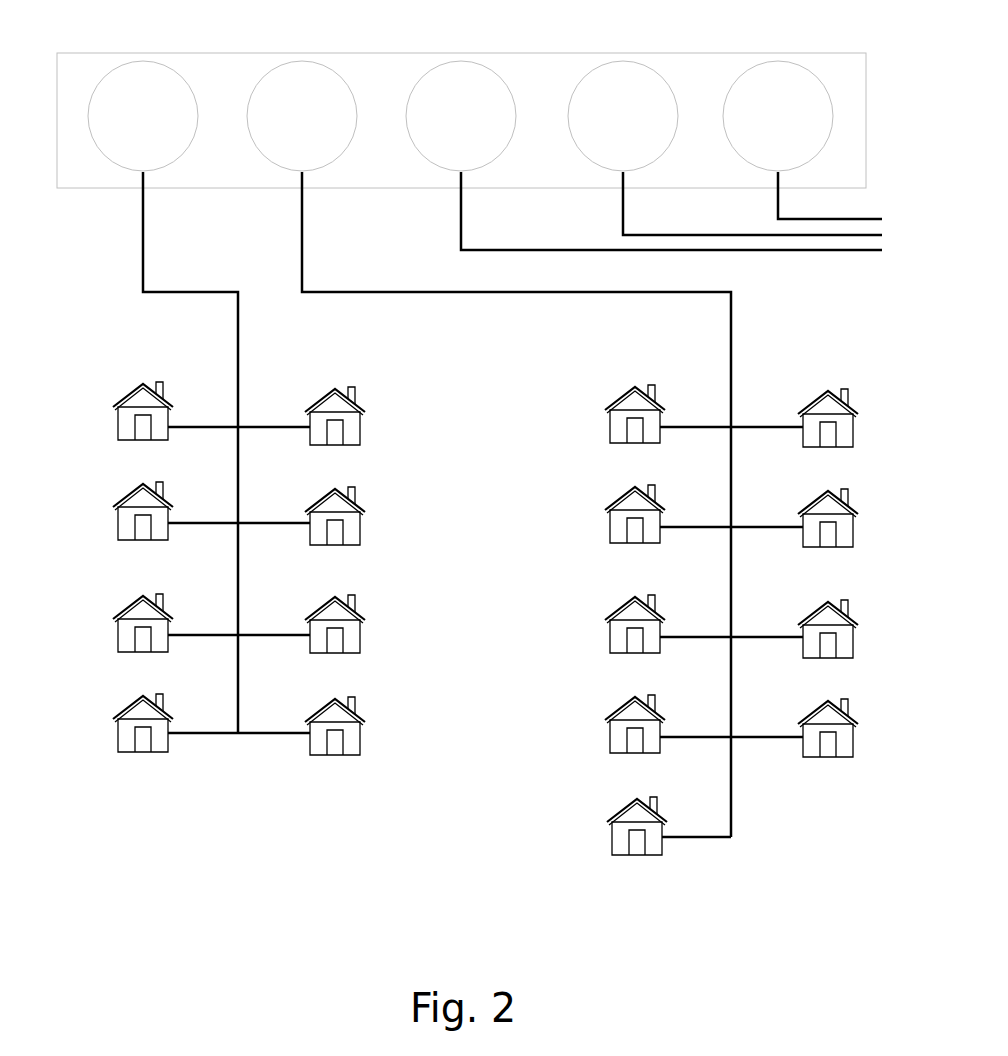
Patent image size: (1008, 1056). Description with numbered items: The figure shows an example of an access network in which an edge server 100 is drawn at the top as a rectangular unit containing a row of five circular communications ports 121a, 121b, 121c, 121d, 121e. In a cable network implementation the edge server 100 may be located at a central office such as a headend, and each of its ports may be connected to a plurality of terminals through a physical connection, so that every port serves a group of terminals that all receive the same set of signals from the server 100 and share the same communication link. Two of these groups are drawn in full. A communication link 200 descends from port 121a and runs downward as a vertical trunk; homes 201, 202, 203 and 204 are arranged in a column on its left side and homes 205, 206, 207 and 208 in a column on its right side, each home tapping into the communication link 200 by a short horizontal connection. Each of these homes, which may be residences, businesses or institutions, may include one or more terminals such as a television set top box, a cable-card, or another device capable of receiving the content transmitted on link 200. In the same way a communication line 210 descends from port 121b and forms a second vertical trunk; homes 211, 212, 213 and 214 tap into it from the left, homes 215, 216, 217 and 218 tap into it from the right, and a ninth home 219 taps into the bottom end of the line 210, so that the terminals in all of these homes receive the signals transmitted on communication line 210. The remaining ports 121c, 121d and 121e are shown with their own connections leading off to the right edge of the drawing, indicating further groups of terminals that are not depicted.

The server 100 is at (287, 53).
The port 121a is at (143, 116).
The port 121b is at (302, 116).
The port 121c is at (461, 116).
The port 121d is at (623, 116).
The port 121e is at (778, 116).
The communication link 200 is at (183, 292).
The communication line 210 is at (341, 292).
The home 201 is at (142, 382).
The home 202 is at (142, 482).
The home 203 is at (142, 594).
The home 204 is at (142, 694).
The home 205 is at (334, 387).
The home 206 is at (334, 487).
The home 207 is at (334, 595).
The home 208 is at (334, 697).
The home 211 is at (634, 385).
The home 212 is at (634, 485).
The home 213 is at (634, 595).
The home 214 is at (634, 695).
The home 215 is at (827, 388).
The home 216 is at (827, 488).
The home 217 is at (827, 598).
The home 218 is at (827, 697).
The home 219 is at (636, 797).